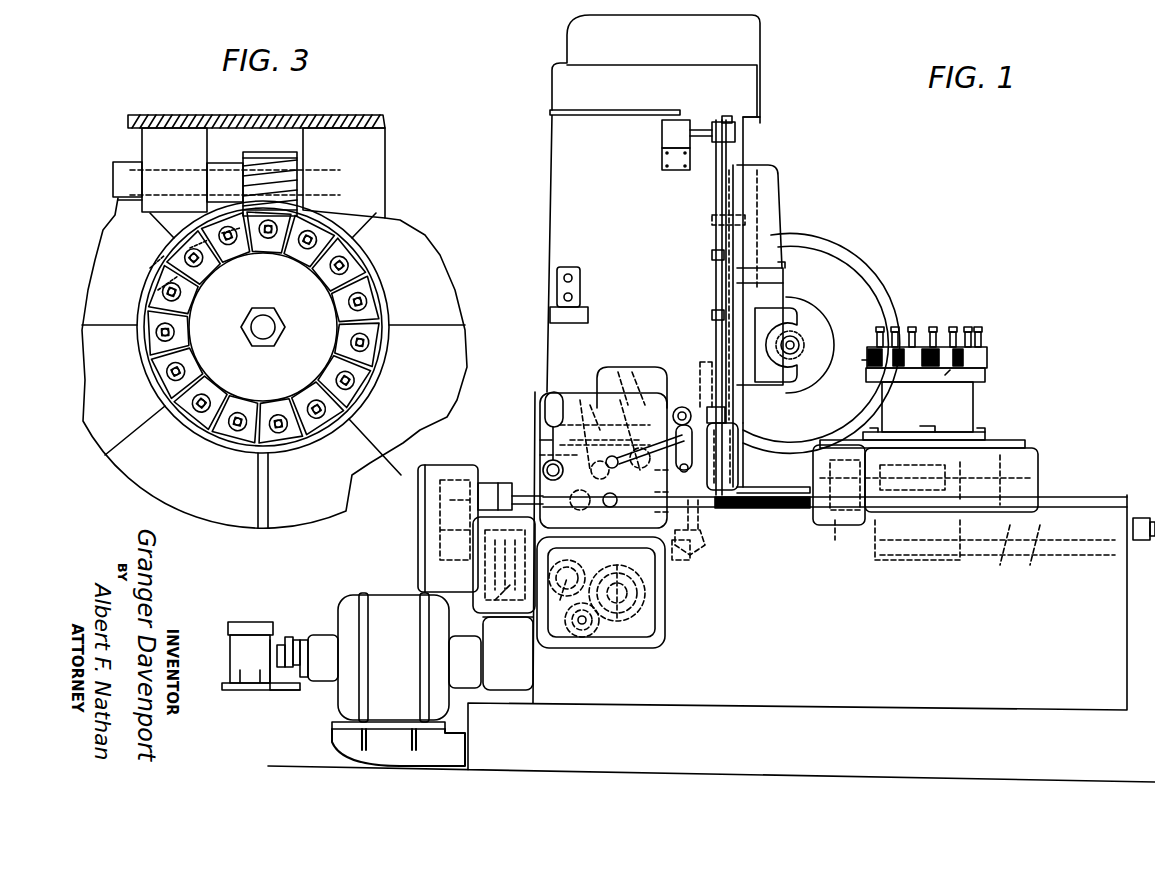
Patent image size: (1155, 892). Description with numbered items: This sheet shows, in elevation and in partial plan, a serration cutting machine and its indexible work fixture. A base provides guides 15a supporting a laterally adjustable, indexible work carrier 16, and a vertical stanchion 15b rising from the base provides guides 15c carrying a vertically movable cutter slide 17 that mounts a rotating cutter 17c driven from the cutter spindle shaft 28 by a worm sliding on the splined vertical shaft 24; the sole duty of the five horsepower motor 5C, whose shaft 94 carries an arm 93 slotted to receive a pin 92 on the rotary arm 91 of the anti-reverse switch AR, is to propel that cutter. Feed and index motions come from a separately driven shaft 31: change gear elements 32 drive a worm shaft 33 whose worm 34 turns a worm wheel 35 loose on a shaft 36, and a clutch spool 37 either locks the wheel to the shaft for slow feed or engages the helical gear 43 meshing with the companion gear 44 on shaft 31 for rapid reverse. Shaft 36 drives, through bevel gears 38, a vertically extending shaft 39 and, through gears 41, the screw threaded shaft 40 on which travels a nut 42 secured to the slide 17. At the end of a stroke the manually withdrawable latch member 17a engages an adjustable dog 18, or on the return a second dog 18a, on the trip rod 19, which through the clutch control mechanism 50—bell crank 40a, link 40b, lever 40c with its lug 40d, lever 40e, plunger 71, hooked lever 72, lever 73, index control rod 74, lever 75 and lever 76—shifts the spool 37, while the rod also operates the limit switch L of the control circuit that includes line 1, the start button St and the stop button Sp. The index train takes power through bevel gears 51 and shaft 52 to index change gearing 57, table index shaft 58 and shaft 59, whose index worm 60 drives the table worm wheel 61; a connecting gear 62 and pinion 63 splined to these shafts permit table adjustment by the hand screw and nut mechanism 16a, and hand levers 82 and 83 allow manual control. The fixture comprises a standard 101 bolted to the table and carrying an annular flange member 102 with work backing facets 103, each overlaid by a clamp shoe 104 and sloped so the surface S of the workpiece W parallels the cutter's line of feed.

In FIG. 1, the line 1 is at (1130, 626).
In FIG. 1, the motor 5C is at (385, 598).
In FIG. 1, the guides 15a is at (1114, 497).
In FIG. 1, the vertical stanchion 15b is at (562, 168).
In FIG. 1, the guides 15c is at (760, 140).
In FIG. 3, the work carrier 16 is at (112, 442).
In FIG. 1, the work carrier 16 is at (1030, 441).
In FIG. 1, the hand screw and nut mechanism 16a is at (1035, 542).
In FIG. 3, the cutter slide 17 is at (388, 125).
In FIG. 1, the cutter slide 17 is at (770, 184).
In FIG. 1, the latch member 17a is at (735, 276).
In FIG. 3, the rotating cutter 17c is at (300, 210).
In FIG. 1, the rotating cutter 17c is at (797, 332).
In FIG. 1, the adjustable dog 18 is at (712, 305).
In FIG. 1, the second dog 18a is at (718, 254).
In FIG. 1, the trip rod 19 is at (724, 172).
In FIG. 1, the splined vertical shaft 24 is at (742, 472).
In FIG. 3, the cutter spindle shaft 28 is at (160, 207).
In FIG. 1, the cutter spindle shaft 28 is at (800, 345).
In FIG. 1, the shaft 31 is at (622, 640).
In FIG. 1, the change gear elements 32 is at (655, 640).
In FIG. 1, the worm shaft 33 is at (562, 615).
In FIG. 1, the worm 34 is at (508, 653).
In FIG. 1, the worm wheel 35 is at (518, 618).
In FIG. 1, the shaft 36 is at (668, 574).
In FIG. 1, the clutch spool 37 is at (540, 486).
In FIG. 1, the bevel gears 38 is at (695, 550).
In FIG. 1, the vertically extending shaft 39 is at (703, 524).
In FIG. 1, the screw threaded shaft 40 is at (720, 328).
In FIG. 1, the bell crank 40a is at (727, 455).
In FIG. 1, the link 40b is at (758, 450).
In FIG. 1, the lever 40c is at (649, 494).
In FIG. 1, the lug 40d is at (653, 472).
In FIG. 1, the lever 40e is at (649, 512).
In FIG. 1, the gears 41 is at (705, 378).
In FIG. 1, the nut 42 is at (712, 220).
In FIG. 1, the helical gear 43 is at (640, 578).
In FIG. 1, the companion gear 44 is at (640, 598).
In FIG. 1, the clutch control mechanism 50 is at (540, 453).
In FIG. 1, the bevel gears 51 is at (608, 645).
In FIG. 1, the shaft 52 is at (493, 602).
In FIG. 1, the index change gearing 57 is at (418, 497).
In FIG. 1, the table index shaft 58 is at (784, 510).
In FIG. 1, the shaft 59 is at (886, 470).
In FIG. 1, the index worm 60 is at (932, 470).
In FIG. 1, the worm wheel 61 is at (1040, 478).
In FIG. 1, the connecting gear 62 is at (832, 478).
In FIG. 1, the pinion 63 is at (832, 528).
In FIG. 1, the plunger 71 is at (632, 387).
In FIG. 1, the hooked lever 72 is at (605, 407).
In FIG. 1, the lever 73 is at (548, 438).
In FIG. 1, the index control rod 74 is at (522, 520).
In FIG. 1, the lever 75 is at (638, 450).
In FIG. 1, the lever 76 is at (603, 463).
In FIG. 1, the hand lever 82 is at (668, 439).
In FIG. 1, the hand lever 83 is at (556, 396).
In FIG. 1, the rotary arm 91 is at (289, 637).
In FIG. 1, the pin 92 is at (280, 643).
In FIG. 1, the arm 93 is at (297, 640).
In FIG. 1, the shaft 94 is at (296, 690).
In FIG. 3, the standard 101 is at (148, 346).
In FIG. 1, the standard 101 is at (975, 410).
In FIG. 1, the annular flange member 102 is at (988, 378).
In FIG. 3, the work backing facets 103 is at (152, 268).
In FIG. 1, the work backing facets 103 is at (948, 370).
In FIG. 3, the clamp shoe 104 is at (280, 408).
In FIG. 1, the clamp shoe 104 is at (985, 342).
In FIG. 1, the limit switch L is at (662, 138).
In FIG. 1, the start button St is at (557, 278).
In FIG. 1, the stop button Sp is at (557, 297).
In FIG. 3, the workpiece W is at (240, 450).
In FIG. 1, the workpiece W is at (990, 358).
In FIG. 1, the surface S is at (866, 360).
In FIG. 1, the anti-reverse switch AR is at (252, 622).